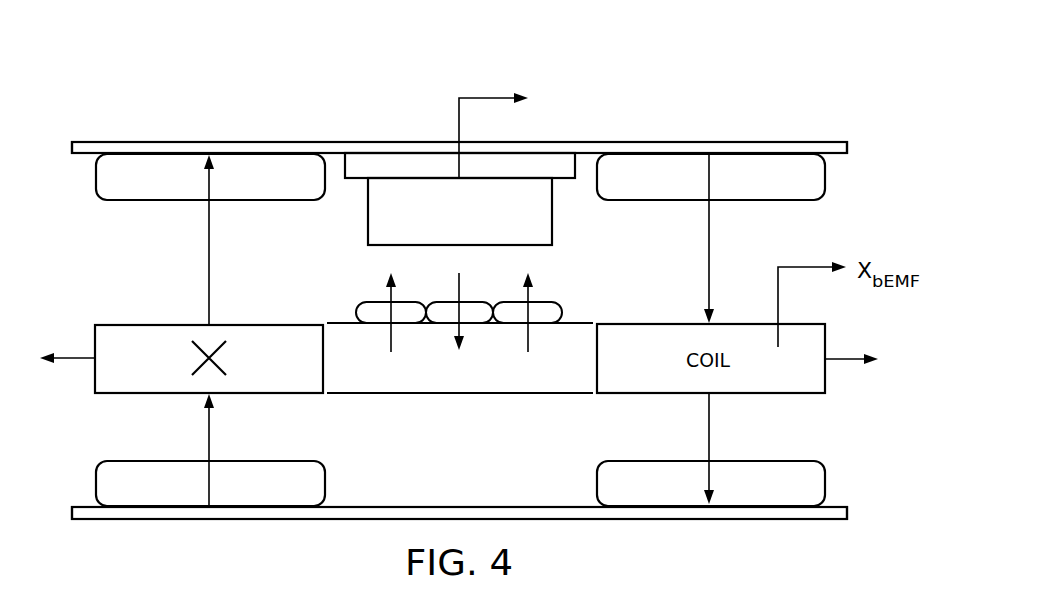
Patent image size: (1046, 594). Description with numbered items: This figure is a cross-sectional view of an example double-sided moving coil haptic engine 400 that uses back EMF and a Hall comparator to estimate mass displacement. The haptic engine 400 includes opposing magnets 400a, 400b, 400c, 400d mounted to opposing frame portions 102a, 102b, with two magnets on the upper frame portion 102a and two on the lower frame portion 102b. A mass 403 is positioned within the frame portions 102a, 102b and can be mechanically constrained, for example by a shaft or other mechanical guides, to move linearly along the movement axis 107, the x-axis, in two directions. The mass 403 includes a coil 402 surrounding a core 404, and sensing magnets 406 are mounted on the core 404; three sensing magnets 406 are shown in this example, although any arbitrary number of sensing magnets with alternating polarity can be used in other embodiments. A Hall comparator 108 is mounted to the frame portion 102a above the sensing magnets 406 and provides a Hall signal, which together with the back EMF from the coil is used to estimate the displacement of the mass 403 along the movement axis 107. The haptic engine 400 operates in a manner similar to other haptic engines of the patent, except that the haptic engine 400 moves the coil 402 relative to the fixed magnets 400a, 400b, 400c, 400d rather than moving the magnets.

The double-sided moving coil haptic engine 400 is at (270, 68).
The frame portion 102a is at (391, 142).
The frame portion 102b is at (347, 520).
The magnet 400a is at (95, 178).
The magnet 400b is at (825, 177).
The magnet 400c is at (95, 483).
The magnet 400d is at (825, 483).
The Hall comparator 108 is at (367, 212).
The mass 403 is at (108, 296).
The coil 402 is at (165, 394).
The movement axis 107 is at (72, 362).
The core 404 is at (424, 394).
The sensing magnets 406 is at (356, 312).